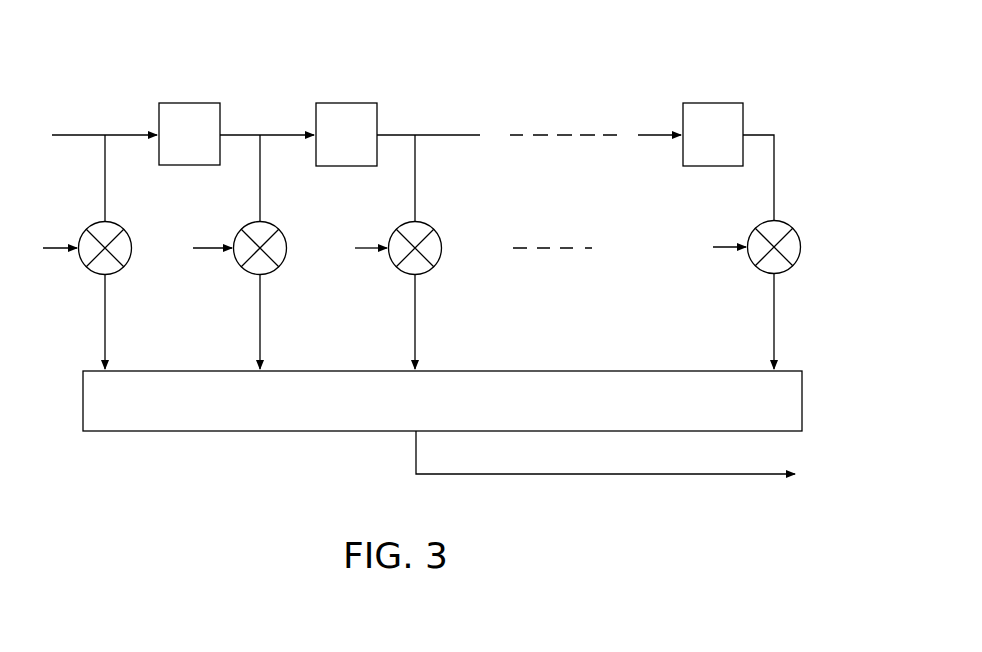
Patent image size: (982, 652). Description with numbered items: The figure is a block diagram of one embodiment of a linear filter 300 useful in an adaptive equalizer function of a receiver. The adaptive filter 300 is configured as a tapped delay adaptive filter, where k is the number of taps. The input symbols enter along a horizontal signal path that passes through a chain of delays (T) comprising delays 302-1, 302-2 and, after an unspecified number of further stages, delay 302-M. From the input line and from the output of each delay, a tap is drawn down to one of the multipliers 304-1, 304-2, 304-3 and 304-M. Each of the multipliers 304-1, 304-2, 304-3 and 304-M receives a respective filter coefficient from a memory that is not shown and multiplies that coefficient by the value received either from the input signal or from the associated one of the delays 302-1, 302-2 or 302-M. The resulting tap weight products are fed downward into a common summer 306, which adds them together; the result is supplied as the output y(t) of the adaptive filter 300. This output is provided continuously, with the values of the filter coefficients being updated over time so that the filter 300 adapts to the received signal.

The adaptive linear filter 300 is at (495, 62).
The delay 302-1 is at (190, 103).
The delay 302-2 is at (347, 103).
The delay 302-M is at (717, 103).
The multiplier 304-1 is at (93, 224).
The multiplier 304-2 is at (243, 225).
The multiplier 304-3 is at (400, 226).
The multiplier 304-M is at (757, 229).
The summer 306 is at (517, 371).